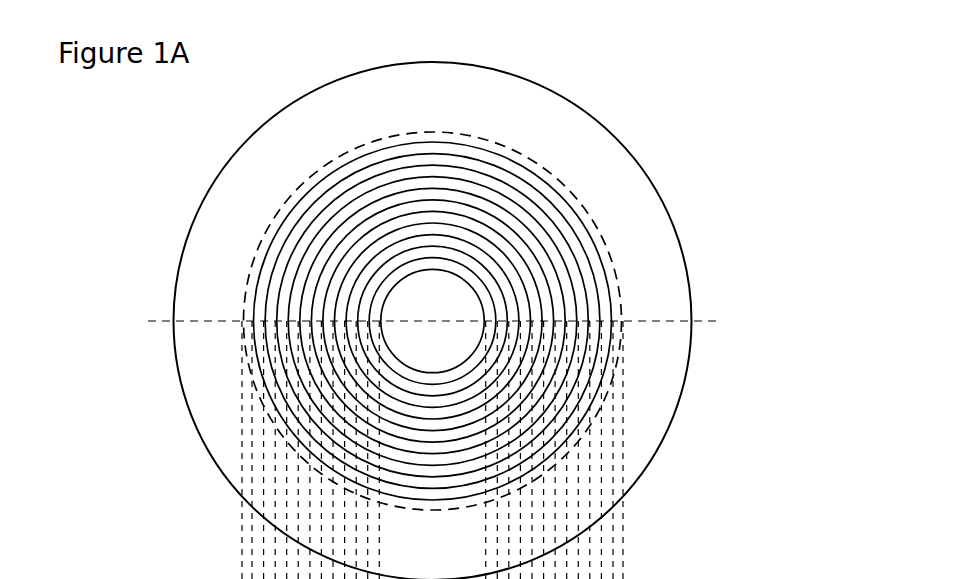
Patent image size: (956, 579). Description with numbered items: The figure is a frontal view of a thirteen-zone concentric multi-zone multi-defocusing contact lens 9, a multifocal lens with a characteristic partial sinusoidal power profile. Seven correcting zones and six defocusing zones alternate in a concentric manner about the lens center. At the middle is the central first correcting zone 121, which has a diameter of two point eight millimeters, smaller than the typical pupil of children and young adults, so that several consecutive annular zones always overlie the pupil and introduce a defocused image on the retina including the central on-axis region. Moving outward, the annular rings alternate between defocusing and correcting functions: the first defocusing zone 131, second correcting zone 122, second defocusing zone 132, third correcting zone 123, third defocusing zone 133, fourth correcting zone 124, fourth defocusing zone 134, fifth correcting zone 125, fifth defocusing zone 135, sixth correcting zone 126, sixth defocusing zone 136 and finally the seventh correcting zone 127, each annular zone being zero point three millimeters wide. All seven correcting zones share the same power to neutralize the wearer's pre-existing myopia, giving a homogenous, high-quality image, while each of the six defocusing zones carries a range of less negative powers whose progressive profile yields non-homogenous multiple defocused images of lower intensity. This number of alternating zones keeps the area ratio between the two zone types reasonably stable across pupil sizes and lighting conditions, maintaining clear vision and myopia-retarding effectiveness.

The contact lens 9 is at (562, 92).
The central first correcting zone 121 is at (436, 303).
The second correcting zone 122 is at (616, 280).
The third correcting zone 123 is at (608, 251).
The fourth correcting zone 124 is at (598, 232).
The fifth correcting zone 125 is at (590, 216).
The sixth correcting zone 126 is at (578, 198).
The seventh correcting zone 127 is at (563, 188).
The first defocusing zone 131 is at (250, 302).
The second defocusing zone 132 is at (242, 283).
The third defocusing zone 133 is at (248, 268).
The fourth defocusing zone 134 is at (260, 247).
The fifth defocusing zone 135 is at (270, 230).
The sixth defocusing zone 136 is at (283, 214).